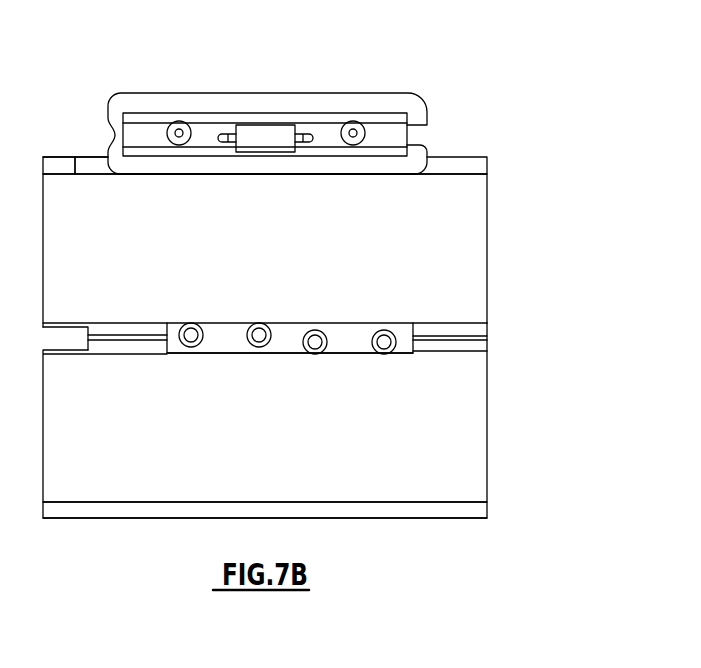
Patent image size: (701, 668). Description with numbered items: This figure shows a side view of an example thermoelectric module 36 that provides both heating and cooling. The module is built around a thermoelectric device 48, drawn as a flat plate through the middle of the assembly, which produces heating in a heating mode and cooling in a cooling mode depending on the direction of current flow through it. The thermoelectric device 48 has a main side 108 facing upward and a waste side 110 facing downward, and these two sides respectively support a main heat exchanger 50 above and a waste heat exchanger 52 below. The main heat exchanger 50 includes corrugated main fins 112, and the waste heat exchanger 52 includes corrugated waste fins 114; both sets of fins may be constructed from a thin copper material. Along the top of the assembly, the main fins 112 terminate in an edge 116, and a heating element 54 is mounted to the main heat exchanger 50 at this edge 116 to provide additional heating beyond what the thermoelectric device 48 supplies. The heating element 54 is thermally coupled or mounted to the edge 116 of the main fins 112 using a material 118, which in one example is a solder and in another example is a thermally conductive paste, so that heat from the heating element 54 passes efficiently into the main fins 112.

The thermoelectric module 36 is at (335, 305).
The thermoelectric device 48 is at (424, 338).
The main heat exchanger 50 is at (291, 238).
The waste heat exchanger 52 is at (292, 420).
The heating element 54 is at (289, 158).
The main side 108 is at (216, 306).
The waste side 110 is at (216, 370).
The main fins 112 is at (462, 275).
The waste fins 114 is at (463, 478).
The edge 116 is at (92, 174).
The material 118 is at (282, 175).